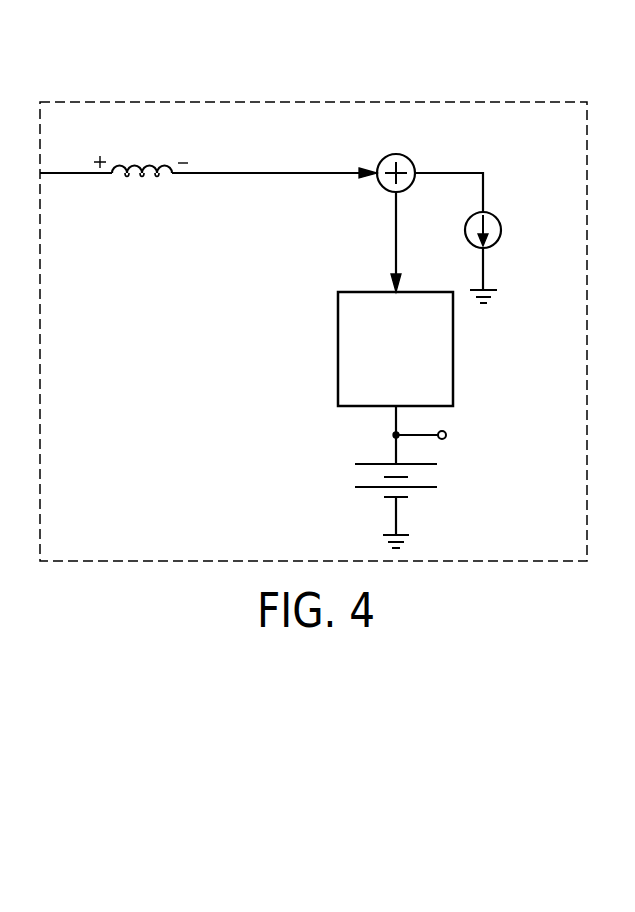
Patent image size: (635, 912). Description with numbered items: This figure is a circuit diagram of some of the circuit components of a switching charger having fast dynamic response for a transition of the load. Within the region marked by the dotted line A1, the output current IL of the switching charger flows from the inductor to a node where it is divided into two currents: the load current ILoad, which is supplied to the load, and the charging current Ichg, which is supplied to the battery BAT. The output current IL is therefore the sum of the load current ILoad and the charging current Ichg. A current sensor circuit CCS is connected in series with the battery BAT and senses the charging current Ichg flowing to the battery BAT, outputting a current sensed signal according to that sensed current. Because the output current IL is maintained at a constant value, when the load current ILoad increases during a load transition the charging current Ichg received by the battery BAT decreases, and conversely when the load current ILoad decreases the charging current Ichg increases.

The dotted line A1 is at (358, 100).
The output current IL is at (83, 144).
The charging current Ichg is at (102, 184).
The load current ILoad is at (520, 257).
The current sensor circuit CCS is at (455, 342).
The battery BAT is at (429, 477).